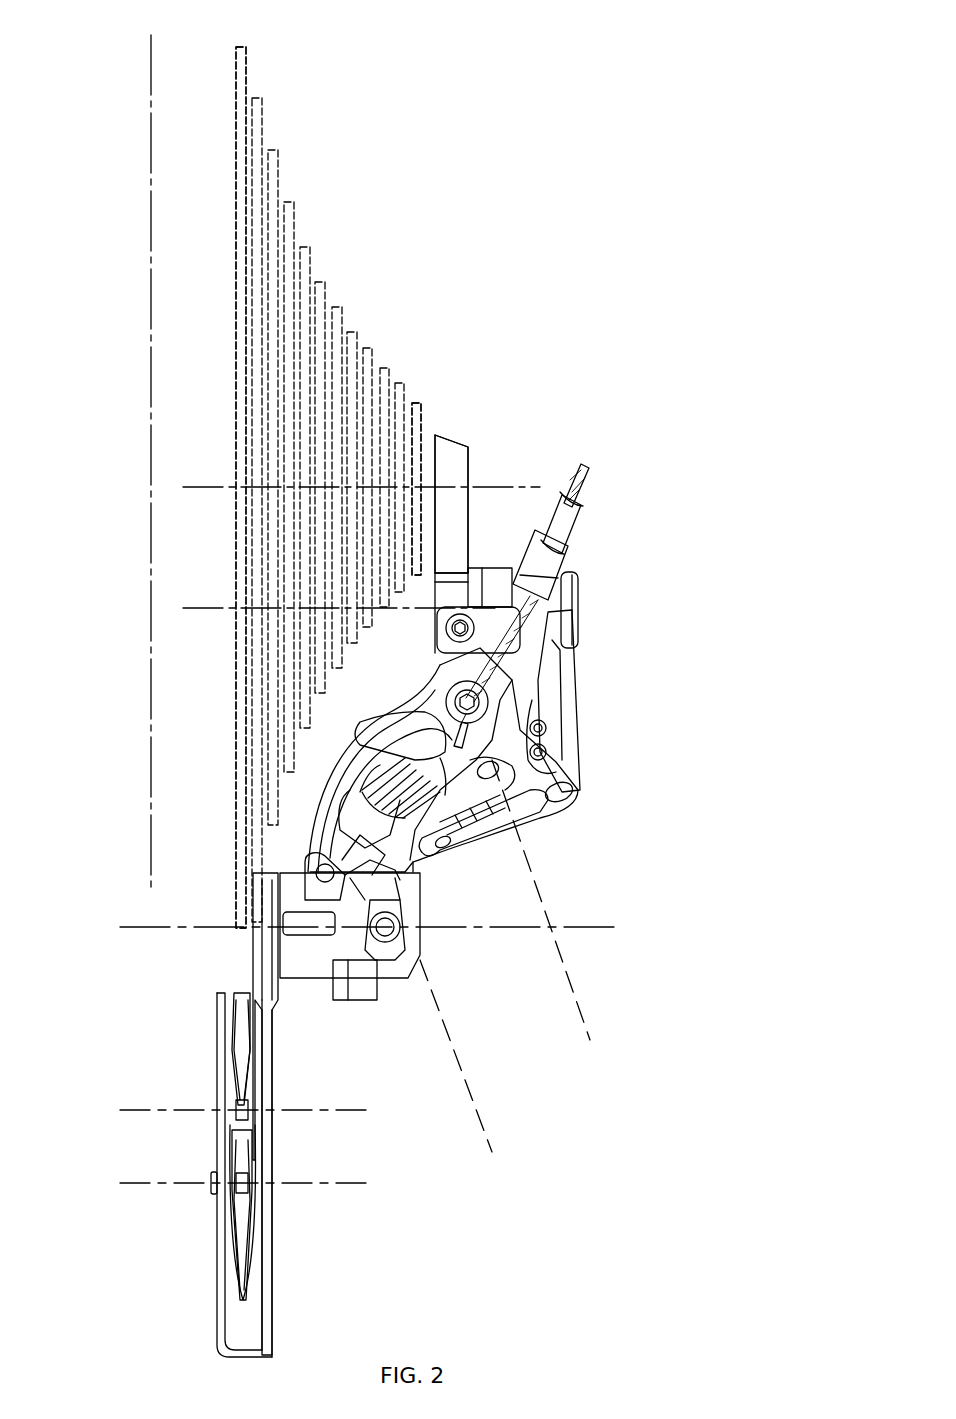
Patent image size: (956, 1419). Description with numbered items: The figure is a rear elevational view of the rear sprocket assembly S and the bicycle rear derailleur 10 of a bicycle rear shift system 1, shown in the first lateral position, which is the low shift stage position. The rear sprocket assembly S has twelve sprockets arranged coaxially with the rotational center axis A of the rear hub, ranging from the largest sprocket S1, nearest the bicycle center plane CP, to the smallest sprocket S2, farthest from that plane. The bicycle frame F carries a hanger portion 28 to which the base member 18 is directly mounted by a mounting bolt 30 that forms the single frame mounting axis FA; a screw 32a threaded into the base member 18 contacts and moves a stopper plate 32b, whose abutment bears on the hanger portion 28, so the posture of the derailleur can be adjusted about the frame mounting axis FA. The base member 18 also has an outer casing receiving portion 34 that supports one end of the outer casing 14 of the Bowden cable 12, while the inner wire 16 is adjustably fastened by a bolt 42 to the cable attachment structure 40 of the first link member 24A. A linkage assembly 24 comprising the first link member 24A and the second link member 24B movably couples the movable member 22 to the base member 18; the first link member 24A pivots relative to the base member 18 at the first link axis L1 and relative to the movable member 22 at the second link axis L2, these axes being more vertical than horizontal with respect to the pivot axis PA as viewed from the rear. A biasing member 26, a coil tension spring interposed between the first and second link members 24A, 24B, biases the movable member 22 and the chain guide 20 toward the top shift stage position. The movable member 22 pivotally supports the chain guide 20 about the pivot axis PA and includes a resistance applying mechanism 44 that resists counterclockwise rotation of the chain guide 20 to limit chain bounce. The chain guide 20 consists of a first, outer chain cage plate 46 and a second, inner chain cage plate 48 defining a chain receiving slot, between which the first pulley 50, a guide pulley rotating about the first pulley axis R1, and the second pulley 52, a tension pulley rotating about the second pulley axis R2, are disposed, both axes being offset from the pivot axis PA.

The bicycle rear shift system 1 is at (575, 146).
The bicycle rear derailleur 10 is at (600, 888).
The Bowden cable 12 is at (560, 558).
The outer casing 14 is at (545, 520).
The inner wire 16 is at (586, 488).
The base member 18 is at (492, 562).
The chain guide 20 is at (242, 1156).
The movable member 22 is at (312, 980).
The linkage assembly 24 is at (476, 755).
The first link member 24A is at (420, 863).
The second link member 24B is at (522, 818).
The biasing member 26 is at (365, 750).
The hanger portion 28 is at (434, 467).
The mounting bolt 30 is at (586, 617).
The screw 32a is at (445, 620).
The stopper plate 32b is at (578, 594).
The outer casing receiving portion 34 is at (540, 570).
The cable attachment structure 40 is at (442, 676).
The bolt 42 is at (450, 694).
The resistance applying mechanism 44 is at (394, 978).
The first chain cage plate 46 is at (272, 1322).
The second chain cage plate 48 is at (217, 1318).
The first pulley 50 is at (240, 995).
The second pulley 52 is at (252, 1292).
The bicycle center plane CP is at (151, 64).
The rear sprocket assembly S is at (384, 226).
The largest sprocket S1 is at (246, 68).
The smallest sprocket S2 is at (420, 422).
The bicycle frame F is at (470, 470).
The rotational center axis A is at (202, 487).
The frame mounting axis FA is at (202, 608).
The pivot axis PA is at (595, 930).
The first link axis L1 is at (580, 1020).
The second link axis L2 is at (480, 1150).
The first pulley axis R1 is at (345, 1110).
The second pulley axis R2 is at (345, 1183).